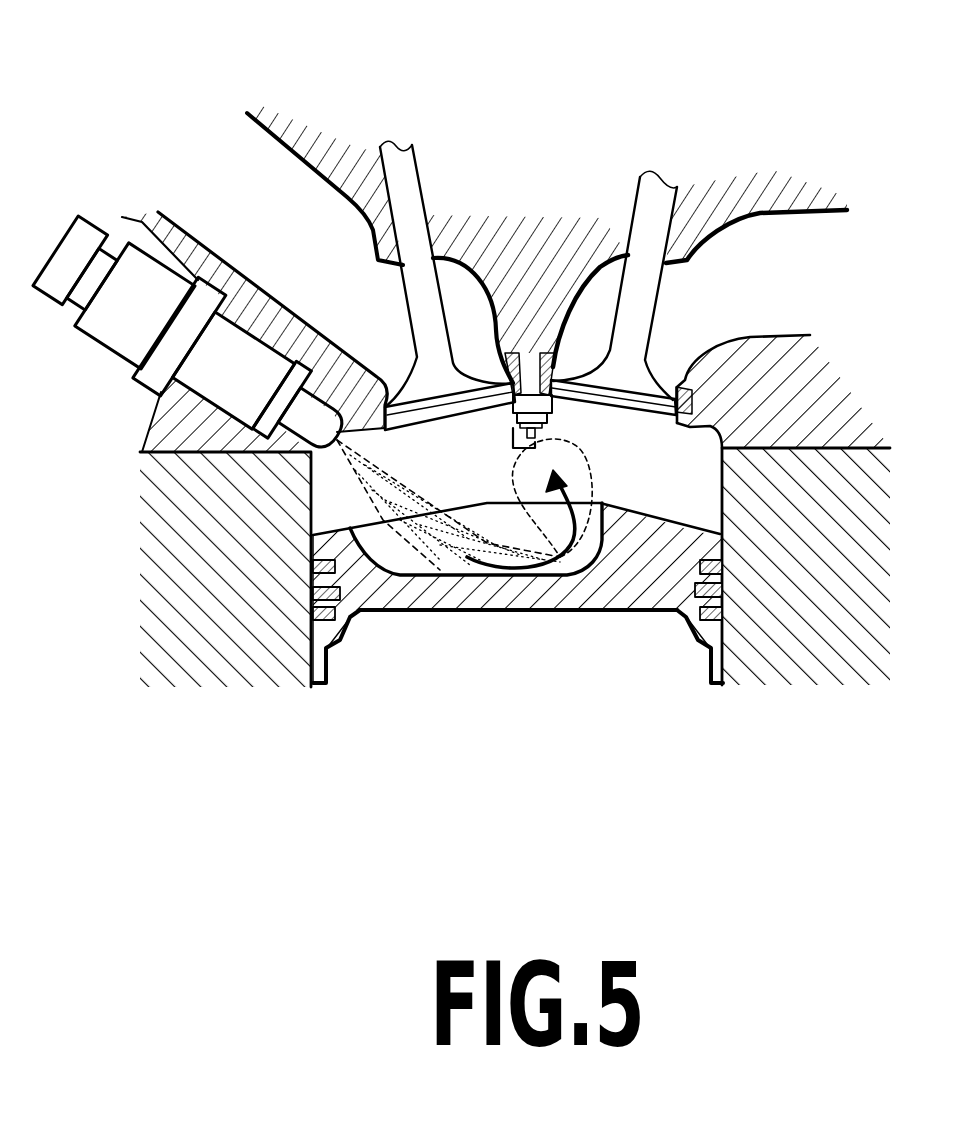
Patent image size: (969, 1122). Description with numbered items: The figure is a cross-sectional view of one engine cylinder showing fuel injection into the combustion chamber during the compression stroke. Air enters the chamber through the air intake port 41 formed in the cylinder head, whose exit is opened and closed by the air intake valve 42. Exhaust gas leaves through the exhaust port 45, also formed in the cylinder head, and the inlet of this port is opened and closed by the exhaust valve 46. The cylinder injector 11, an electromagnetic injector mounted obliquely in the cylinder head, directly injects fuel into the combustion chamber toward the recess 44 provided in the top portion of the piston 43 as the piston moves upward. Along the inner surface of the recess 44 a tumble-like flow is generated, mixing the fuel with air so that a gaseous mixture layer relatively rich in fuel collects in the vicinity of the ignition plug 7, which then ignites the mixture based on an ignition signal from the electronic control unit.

The ignition plug 7 is at (517, 358).
The cylinder injector 11 is at (122, 313).
The air intake port 41 is at (310, 198).
The air intake valve 42 is at (427, 195).
The piston 43 is at (637, 575).
The recess 44 is at (402, 548).
The exhaust port 45 is at (752, 250).
The exhaust valve 46 is at (638, 232).